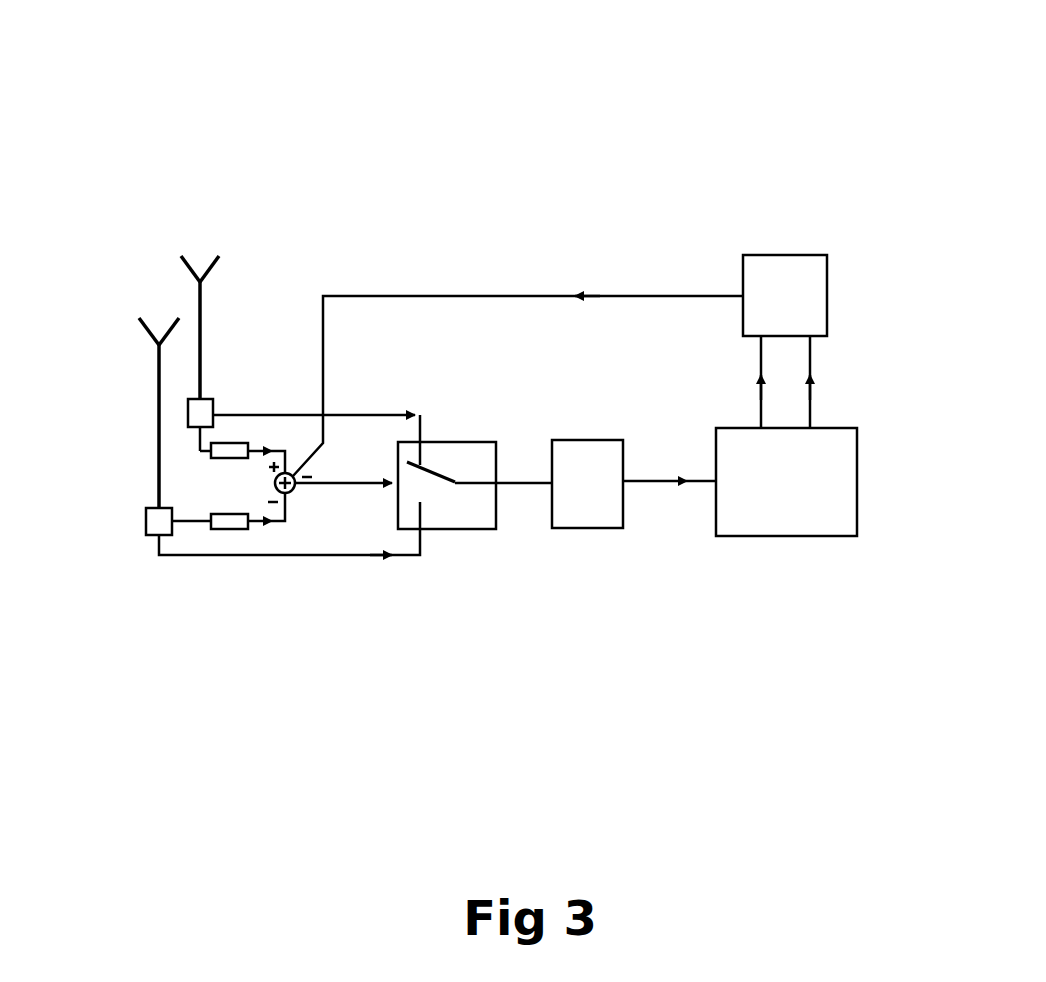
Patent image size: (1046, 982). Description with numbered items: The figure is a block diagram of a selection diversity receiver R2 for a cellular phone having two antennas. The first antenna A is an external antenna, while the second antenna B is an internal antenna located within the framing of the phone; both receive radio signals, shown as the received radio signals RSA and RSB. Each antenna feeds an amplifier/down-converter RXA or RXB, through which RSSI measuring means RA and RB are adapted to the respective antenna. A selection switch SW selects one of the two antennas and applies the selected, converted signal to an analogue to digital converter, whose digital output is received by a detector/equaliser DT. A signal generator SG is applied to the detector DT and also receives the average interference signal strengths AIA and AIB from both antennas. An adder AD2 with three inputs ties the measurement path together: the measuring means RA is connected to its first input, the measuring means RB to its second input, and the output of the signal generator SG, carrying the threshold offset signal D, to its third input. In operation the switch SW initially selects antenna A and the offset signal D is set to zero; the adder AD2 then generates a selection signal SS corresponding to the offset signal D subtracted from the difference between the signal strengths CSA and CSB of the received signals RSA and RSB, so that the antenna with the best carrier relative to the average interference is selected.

The selection diversity receiver R2 is at (533, 186).
The first antenna A is at (202, 323).
The second antenna B is at (159, 372).
The amplifier/down-converter RXA is at (190, 418).
The amplifier/down-converter RXB is at (157, 525).
The measuring means RA is at (228, 456).
The measuring means RB is at (227, 531).
The signal strength CSA is at (263, 450).
The signal strength CSB is at (268, 524).
The adder AD2 is at (297, 490).
The received radio signal RSA is at (422, 413).
The received radio signal RSB is at (381, 560).
The selection signal SS is at (370, 480).
The selection switch SW is at (465, 457).
The detector/equaliser DT is at (842, 512).
The signal generator SG is at (788, 277).
The offset signal D is at (576, 292).
The average interference signal strength AIA is at (760, 375).
The average interference signal strength AIB is at (811, 375).